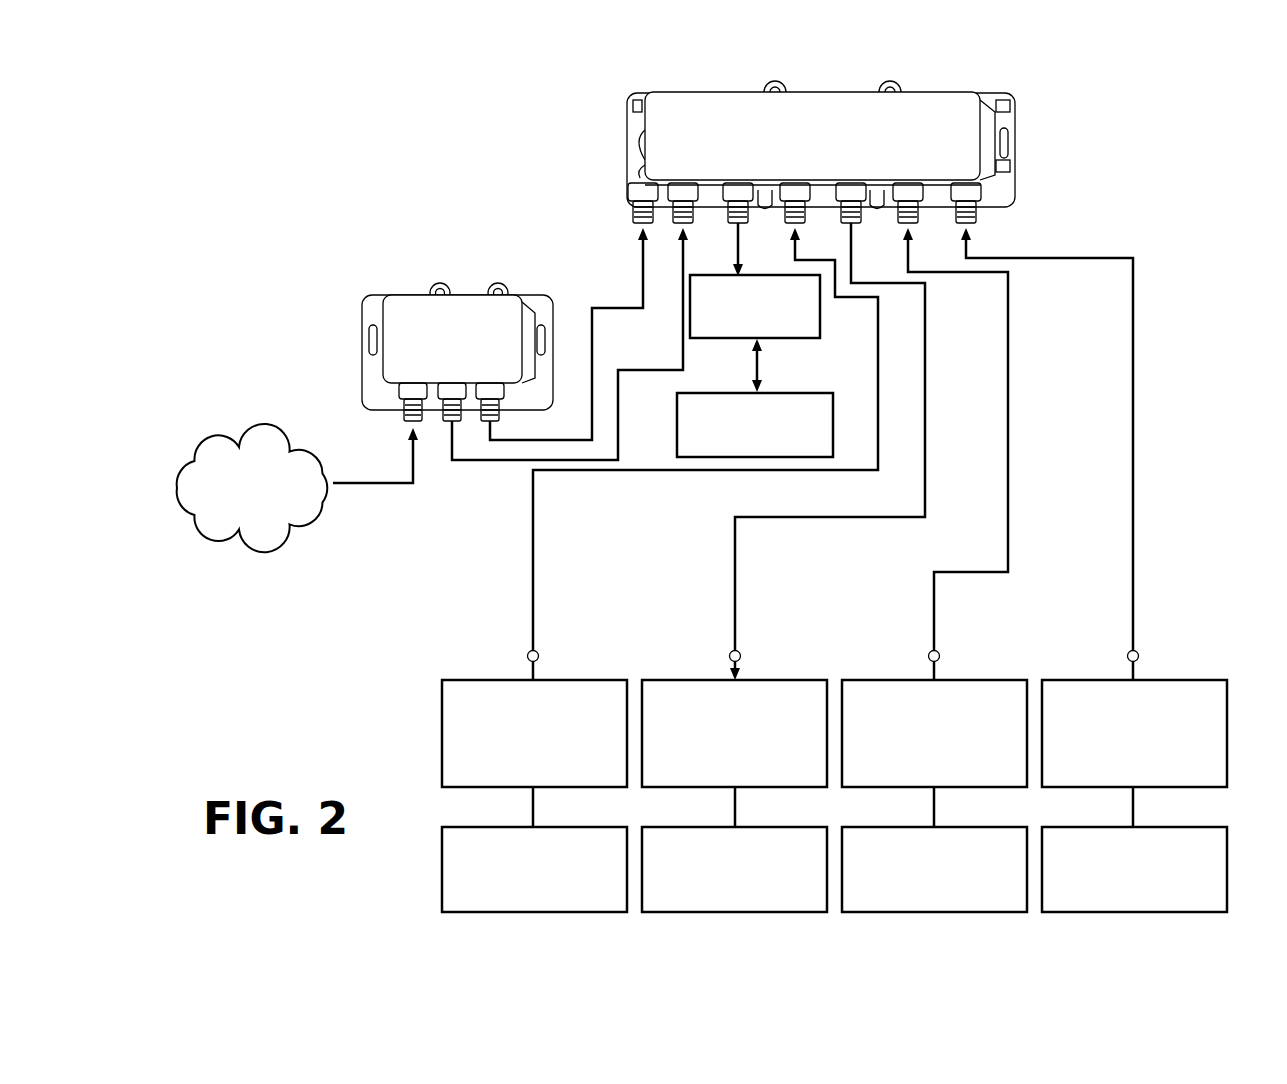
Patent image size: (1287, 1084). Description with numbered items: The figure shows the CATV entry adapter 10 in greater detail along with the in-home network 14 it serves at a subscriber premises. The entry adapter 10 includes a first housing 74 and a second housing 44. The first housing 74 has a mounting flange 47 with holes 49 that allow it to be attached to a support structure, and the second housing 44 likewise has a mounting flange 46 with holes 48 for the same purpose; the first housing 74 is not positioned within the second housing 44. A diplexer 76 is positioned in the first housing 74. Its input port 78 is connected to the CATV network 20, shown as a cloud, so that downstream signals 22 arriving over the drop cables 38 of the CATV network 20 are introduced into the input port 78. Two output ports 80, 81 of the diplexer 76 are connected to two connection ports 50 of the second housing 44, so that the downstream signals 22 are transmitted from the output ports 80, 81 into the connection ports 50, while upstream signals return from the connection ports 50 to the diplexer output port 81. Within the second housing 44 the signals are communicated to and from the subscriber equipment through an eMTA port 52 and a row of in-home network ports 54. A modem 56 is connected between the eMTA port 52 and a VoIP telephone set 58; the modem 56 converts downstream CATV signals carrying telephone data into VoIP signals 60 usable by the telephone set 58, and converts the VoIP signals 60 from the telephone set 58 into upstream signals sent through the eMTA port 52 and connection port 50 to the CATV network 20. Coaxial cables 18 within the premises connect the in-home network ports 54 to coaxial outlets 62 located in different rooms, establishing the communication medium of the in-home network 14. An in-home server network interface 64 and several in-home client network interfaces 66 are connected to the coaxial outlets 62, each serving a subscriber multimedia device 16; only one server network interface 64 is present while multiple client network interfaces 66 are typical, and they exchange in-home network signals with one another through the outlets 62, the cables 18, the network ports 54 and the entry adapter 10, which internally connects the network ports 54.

The CATV entry adapter 10 is at (1110, 112).
The in-home network 14 is at (1172, 474).
The multimedia devices 16 is at (530, 912).
The coaxial cables 18 is at (925, 303).
The CATV network 20 is at (225, 440).
The downstream signals 22 is at (662, 368).
The drop cables 38 is at (643, 285).
The second housing 44 is at (955, 92).
The mounting flange 46 is at (629, 110).
The mounting flange 47 is at (508, 283).
The holes 48 is at (640, 145).
The holes 49 is at (450, 283).
The connection ports 50 is at (633, 218).
The eMTA port 52 is at (727, 218).
The in-home network ports 54 is at (805, 218).
The modem 56 is at (798, 340).
The telephone set 58 is at (675, 440).
The signals 60 is at (752, 367).
The coaxial outlets 62 is at (527, 656).
The in-home server network interface 64 is at (568, 680).
The in-home client network interfaces 66 is at (768, 680).
The first housing 74 is at (402, 295).
The diplexer 76 is at (466, 342).
The input port 78 is at (410, 385).
The output port 80 is at (449, 385).
The output port 81 is at (487, 385).